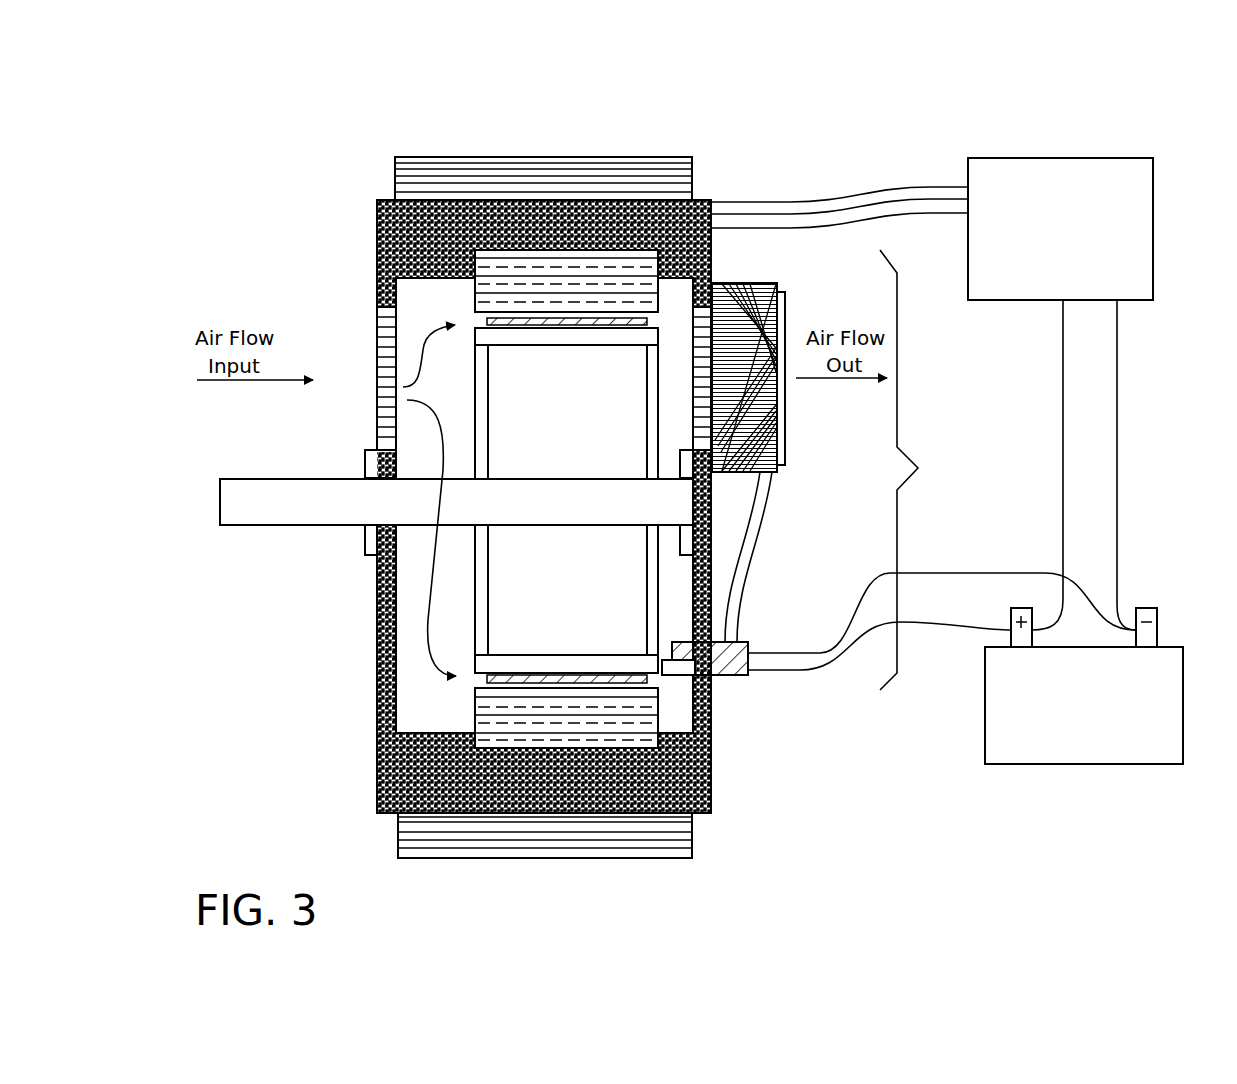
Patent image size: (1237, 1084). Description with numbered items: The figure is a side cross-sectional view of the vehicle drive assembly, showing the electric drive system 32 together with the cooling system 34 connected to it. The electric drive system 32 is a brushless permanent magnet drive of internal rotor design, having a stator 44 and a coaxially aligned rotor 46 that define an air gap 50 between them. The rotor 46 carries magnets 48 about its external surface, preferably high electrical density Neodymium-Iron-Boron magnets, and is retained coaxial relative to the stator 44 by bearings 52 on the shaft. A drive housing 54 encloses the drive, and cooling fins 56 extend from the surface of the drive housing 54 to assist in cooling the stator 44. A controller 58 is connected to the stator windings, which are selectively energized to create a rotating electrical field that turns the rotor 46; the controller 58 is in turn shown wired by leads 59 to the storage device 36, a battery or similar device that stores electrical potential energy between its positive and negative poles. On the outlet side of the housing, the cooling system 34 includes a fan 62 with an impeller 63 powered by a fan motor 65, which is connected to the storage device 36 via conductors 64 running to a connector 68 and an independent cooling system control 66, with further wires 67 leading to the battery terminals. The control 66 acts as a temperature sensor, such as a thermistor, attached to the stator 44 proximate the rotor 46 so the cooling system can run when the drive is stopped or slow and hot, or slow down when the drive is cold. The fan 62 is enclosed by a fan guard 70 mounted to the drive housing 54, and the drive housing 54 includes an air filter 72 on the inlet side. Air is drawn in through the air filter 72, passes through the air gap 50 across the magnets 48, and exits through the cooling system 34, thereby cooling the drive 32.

The electric drive system 32 is at (532, 510).
The cooling system 34 is at (919, 470).
The storage device 36 is at (1100, 764).
The stator 44 is at (543, 286).
The rotor 46 is at (578, 562).
The magnets 48 is at (487, 322).
The air gap 50 is at (713, 250).
The bearings 52 is at (365, 465).
The drive housing 54 is at (713, 770).
The cooling fins 56 is at (400, 178).
The controller 58 is at (1078, 247).
The controller leads 59 is at (1062, 470).
The fan 62 is at (797, 357).
The impeller 63 is at (760, 283).
The conductors 64 is at (760, 570).
The fan motor 65 is at (780, 390).
The cooling system control 66 is at (745, 677).
The battery leads 67 is at (985, 573).
The connector 68 is at (662, 665).
The fan guard 70 is at (786, 318).
The air filter 72 is at (380, 367).